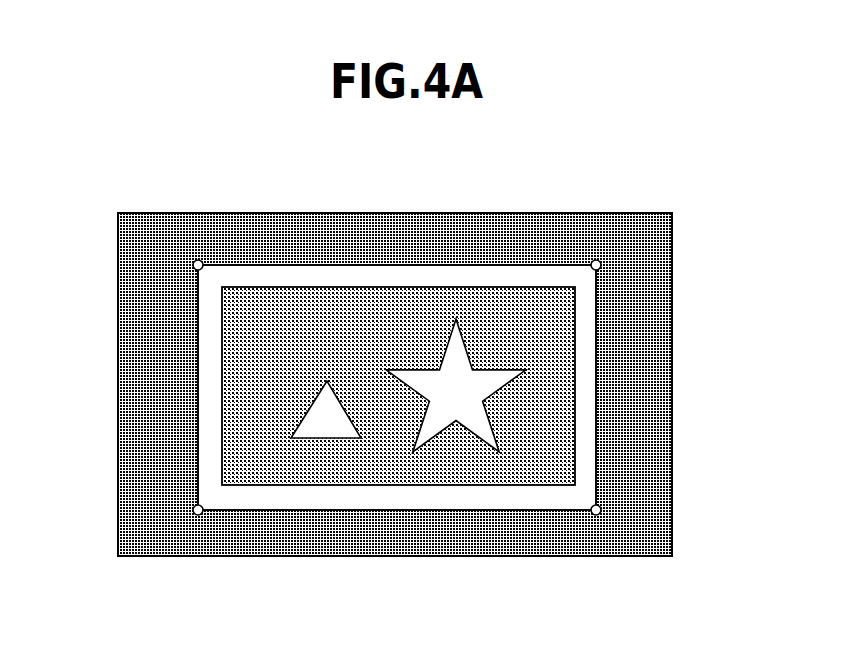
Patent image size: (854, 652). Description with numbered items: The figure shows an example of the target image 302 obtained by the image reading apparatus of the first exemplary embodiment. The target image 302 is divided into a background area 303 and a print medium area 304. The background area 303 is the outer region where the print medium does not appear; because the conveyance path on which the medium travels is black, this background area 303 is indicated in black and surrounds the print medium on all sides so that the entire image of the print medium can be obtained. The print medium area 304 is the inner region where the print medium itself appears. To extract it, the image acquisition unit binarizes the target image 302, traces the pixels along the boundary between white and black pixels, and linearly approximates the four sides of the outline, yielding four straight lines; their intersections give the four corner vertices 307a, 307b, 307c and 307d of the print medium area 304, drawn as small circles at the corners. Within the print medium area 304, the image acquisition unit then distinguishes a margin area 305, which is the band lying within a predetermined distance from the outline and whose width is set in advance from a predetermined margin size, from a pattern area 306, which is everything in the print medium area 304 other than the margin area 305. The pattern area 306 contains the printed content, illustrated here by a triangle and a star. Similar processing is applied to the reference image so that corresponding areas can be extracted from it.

The target image 302 is at (198, 213).
The background area 303 is at (275, 230).
The print medium area 304 is at (362, 262).
The margin area 305 is at (441, 275).
The pattern area 306 is at (520, 313).
The vertex 307a is at (192, 266).
The vertex 307b is at (602, 265).
The vertex 307c is at (192, 511).
The vertex 307d is at (602, 509).